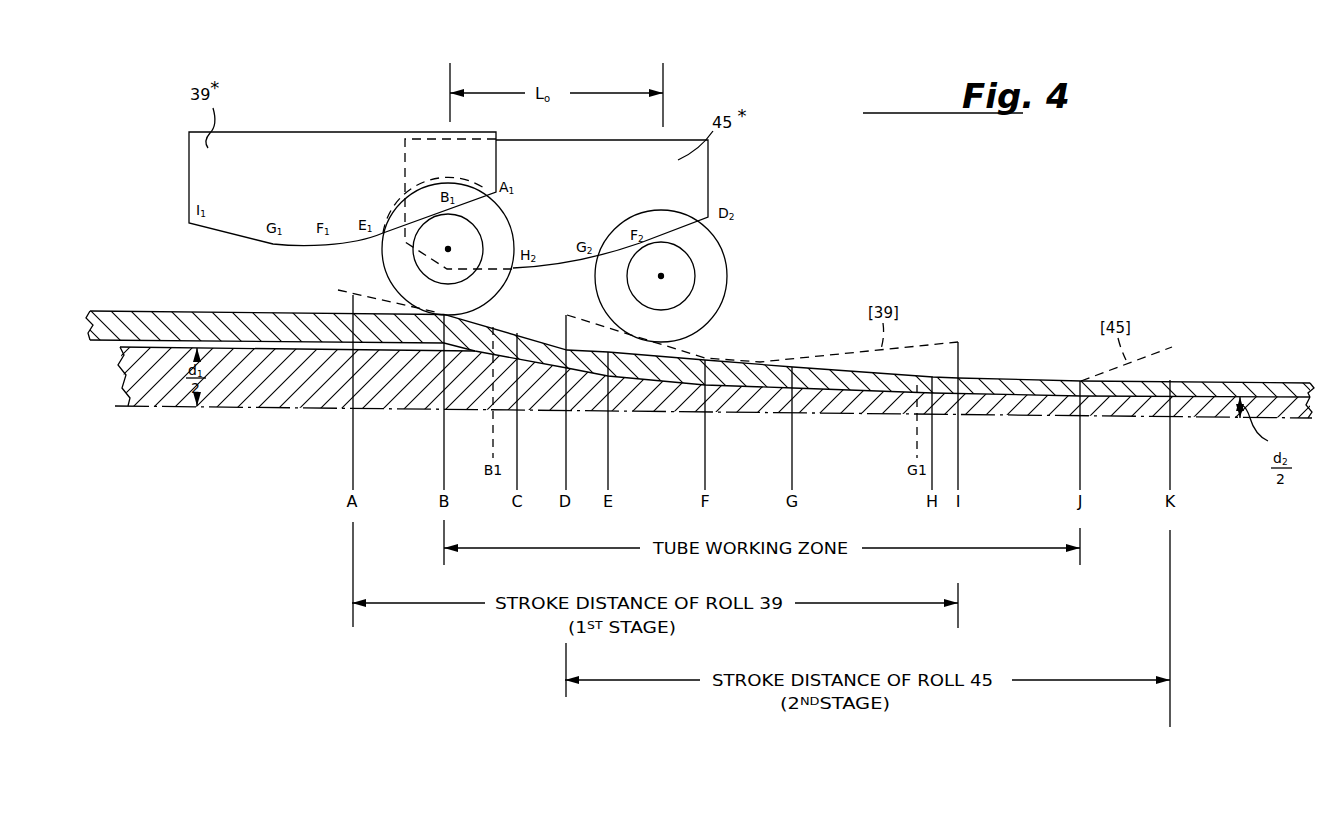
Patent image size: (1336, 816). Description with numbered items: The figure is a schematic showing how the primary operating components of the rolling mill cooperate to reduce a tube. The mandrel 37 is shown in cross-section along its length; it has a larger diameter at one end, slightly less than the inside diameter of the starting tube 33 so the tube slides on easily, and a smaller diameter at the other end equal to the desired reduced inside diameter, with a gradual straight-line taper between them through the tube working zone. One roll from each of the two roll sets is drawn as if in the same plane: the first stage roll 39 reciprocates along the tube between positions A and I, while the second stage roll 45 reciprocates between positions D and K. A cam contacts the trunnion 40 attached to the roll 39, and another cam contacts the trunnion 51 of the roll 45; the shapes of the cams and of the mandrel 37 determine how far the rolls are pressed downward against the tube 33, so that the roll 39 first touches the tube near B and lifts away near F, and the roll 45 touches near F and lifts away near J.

The tube 33 is at (129, 322).
The mandrel 37 is at (162, 381).
The first stage roll 39 is at (392, 258).
The trunnion 40 is at (470, 271).
The second stage roll 45 is at (700, 299).
The trunnion 51 is at (680, 267).